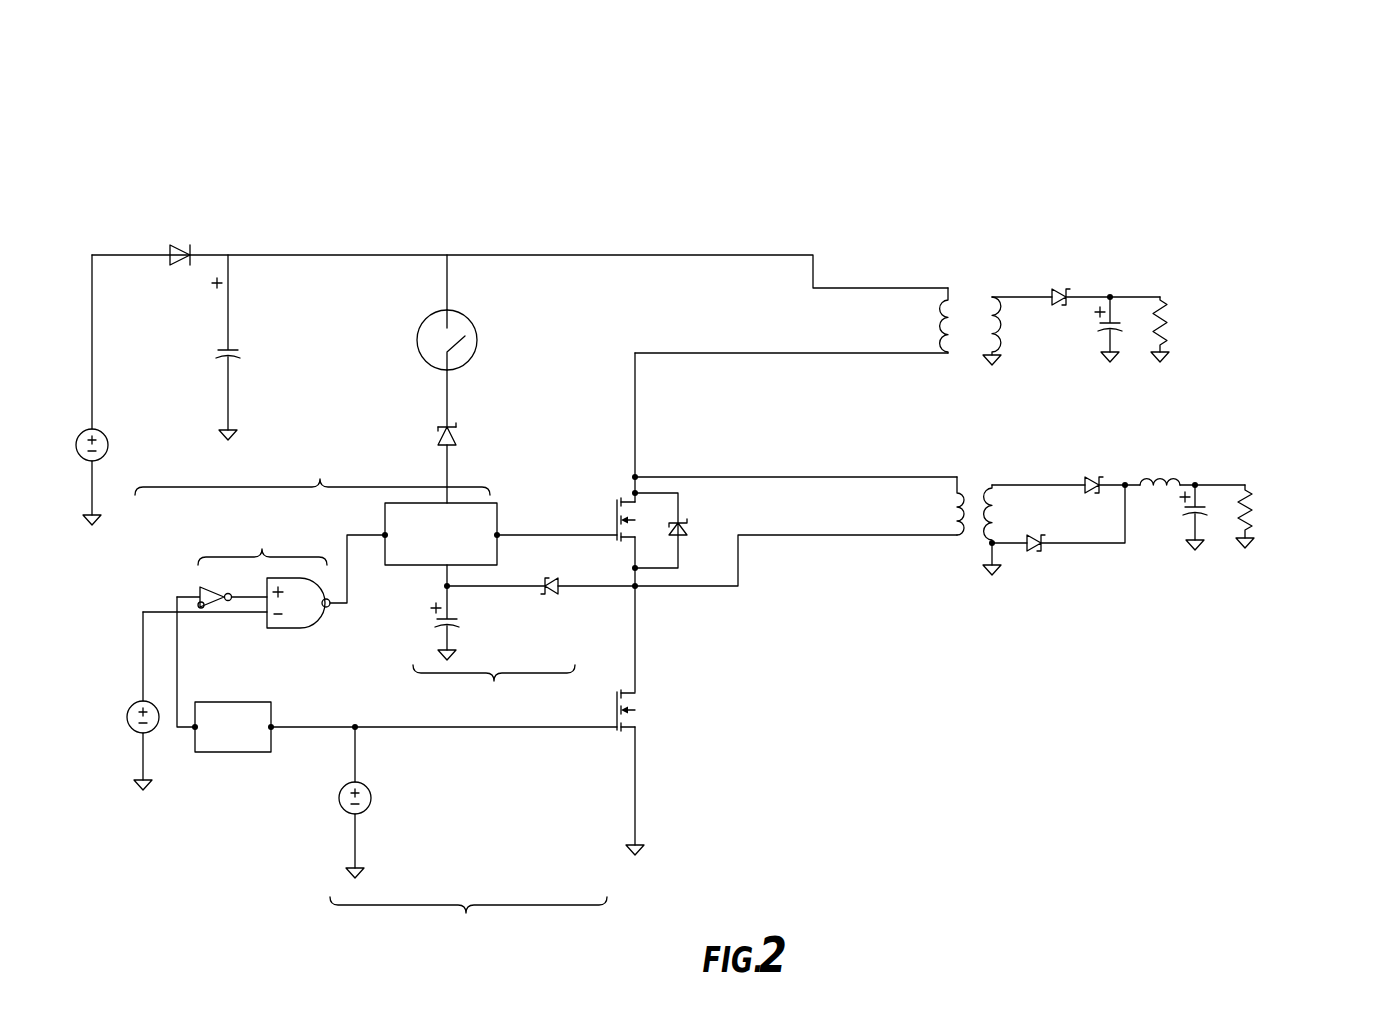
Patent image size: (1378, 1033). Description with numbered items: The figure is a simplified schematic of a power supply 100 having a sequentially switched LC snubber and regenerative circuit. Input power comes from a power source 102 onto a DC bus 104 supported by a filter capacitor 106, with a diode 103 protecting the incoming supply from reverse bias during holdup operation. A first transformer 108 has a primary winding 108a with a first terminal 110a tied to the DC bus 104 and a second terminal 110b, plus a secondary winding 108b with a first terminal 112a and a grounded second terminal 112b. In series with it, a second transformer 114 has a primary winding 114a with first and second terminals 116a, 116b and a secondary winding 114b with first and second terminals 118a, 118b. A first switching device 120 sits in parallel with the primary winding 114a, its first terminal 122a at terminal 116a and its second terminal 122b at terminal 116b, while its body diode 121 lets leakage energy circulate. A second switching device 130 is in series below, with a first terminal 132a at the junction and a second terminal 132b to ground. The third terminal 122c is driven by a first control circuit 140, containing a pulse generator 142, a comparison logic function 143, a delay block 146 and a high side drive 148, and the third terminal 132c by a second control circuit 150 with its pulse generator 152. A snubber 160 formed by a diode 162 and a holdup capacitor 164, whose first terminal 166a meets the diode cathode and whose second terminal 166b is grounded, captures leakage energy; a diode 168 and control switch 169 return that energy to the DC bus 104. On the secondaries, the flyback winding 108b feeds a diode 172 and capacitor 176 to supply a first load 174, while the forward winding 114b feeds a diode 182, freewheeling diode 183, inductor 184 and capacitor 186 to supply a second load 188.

The power supply 100 is at (1268, 68).
The power source 102 is at (75, 445).
The diode 103 is at (180, 245).
The DC bus 104 is at (413, 255).
The filter capacitor 106 is at (290, 400).
The first transformer 108 is at (947, 263).
The primary winding 108a is at (945, 300).
The secondary winding 108b is at (1033, 210).
The first terminal 110a is at (945, 290).
The second terminal 110b is at (945, 345).
The first terminal 112a is at (992, 298).
The second terminal 112b is at (1000, 350).
The second transformer 114 is at (939, 581).
The primary winding 114a is at (843, 603).
The secondary winding 114b is at (1021, 570).
The first terminal 116a is at (950, 477).
The second terminal 116b is at (950, 530).
The first terminal 118a is at (992, 488).
The second terminal 118b is at (1010, 540).
The first switching device 120 is at (648, 505).
The body diode 121 is at (692, 528).
The first terminal 122a is at (628, 497).
The second terminal 122b is at (640, 570).
The third terminal 122c is at (613, 530).
The second switching device 130 is at (742, 738).
The first terminal 132a is at (637, 670).
The second terminal 132b is at (638, 757).
The third terminal 132c is at (580, 726).
The first control circuit 140 is at (312, 466).
The second pulse generator 142 is at (127, 717).
The comparison logic function 143 is at (264, 566).
The delay block 146 is at (252, 772).
The high side drive circuit 148 is at (540, 520).
The second control circuit 150 is at (468, 929).
The first pulse generator 152 is at (462, 866).
The snubber and hold up circuit 160 is at (494, 692).
The diode 162 is at (553, 582).
The holdup capacitor 164 is at (508, 645).
The first terminal 166a is at (445, 587).
The second terminal 166b is at (445, 627).
The diode 168 is at (457, 430).
The control switch 169 is at (500, 332).
The diode 172 is at (1080, 285).
The first DC load 174 is at (1185, 297).
The capacitor 176 is at (1105, 330).
The diode 182 is at (1105, 478).
The diode 183 is at (1048, 545).
The inductor 184 is at (1180, 475).
The capacitor 186 is at (1212, 512).
The second load 188 is at (1285, 522).